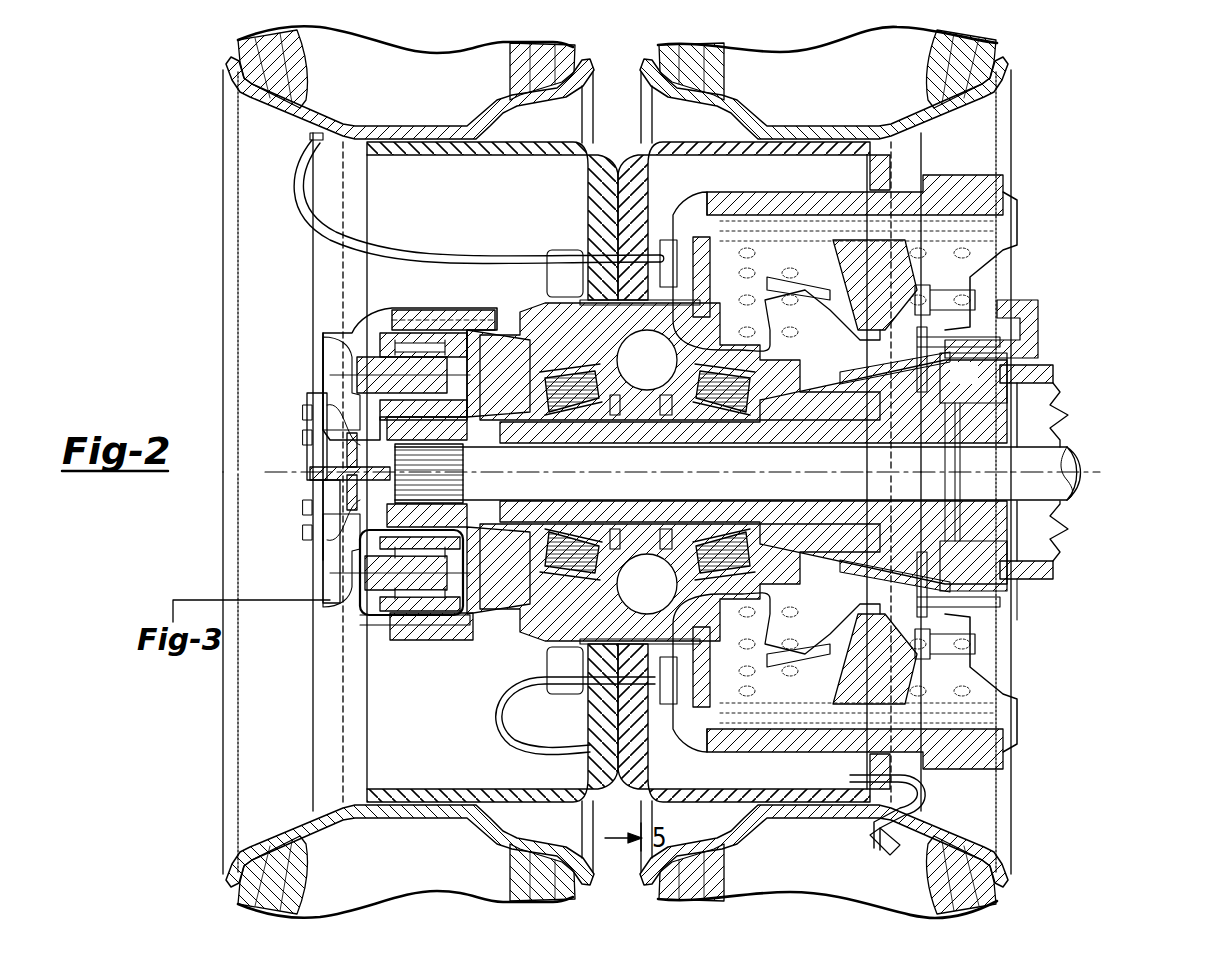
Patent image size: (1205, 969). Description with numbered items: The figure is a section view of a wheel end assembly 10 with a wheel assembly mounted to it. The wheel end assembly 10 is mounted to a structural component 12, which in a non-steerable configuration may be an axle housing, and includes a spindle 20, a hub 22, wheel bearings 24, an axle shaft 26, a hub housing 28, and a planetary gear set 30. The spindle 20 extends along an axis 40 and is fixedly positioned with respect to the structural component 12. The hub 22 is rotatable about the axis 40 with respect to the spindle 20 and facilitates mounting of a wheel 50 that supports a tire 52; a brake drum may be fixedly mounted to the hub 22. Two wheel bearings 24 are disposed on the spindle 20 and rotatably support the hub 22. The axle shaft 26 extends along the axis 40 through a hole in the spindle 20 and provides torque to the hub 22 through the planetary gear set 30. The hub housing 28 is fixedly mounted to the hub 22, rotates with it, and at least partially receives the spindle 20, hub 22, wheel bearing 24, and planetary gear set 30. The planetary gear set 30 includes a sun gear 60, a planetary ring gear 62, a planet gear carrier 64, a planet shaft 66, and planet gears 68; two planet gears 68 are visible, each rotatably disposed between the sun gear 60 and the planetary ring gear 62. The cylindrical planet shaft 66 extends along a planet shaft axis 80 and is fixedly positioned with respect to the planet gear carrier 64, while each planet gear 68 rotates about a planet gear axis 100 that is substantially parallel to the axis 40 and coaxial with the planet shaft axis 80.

The wheel end assembly 10 is at (200, 296).
The structural component 12 is at (1050, 363).
The spindle 20 is at (876, 560).
The hub 22 is at (597, 345).
The wheel bearing 24 is at (577, 532).
The axle shaft 26 is at (1068, 447).
The hub housing 28 is at (358, 308).
The planetary gear set 30 is at (430, 300).
The axis 40 is at (1103, 473).
The wheel 50 is at (231, 86).
The tire 52 is at (243, 50).
The sun gear 60 is at (332, 511).
The planetary ring gear 62 is at (393, 671).
The planet gear carrier 64 is at (325, 338).
The planet shaft 66 is at (358, 388).
The planet gear 68 is at (380, 416).
The planet shaft axis 80 is at (325, 375).
The planet gear axis 100 is at (323, 568).